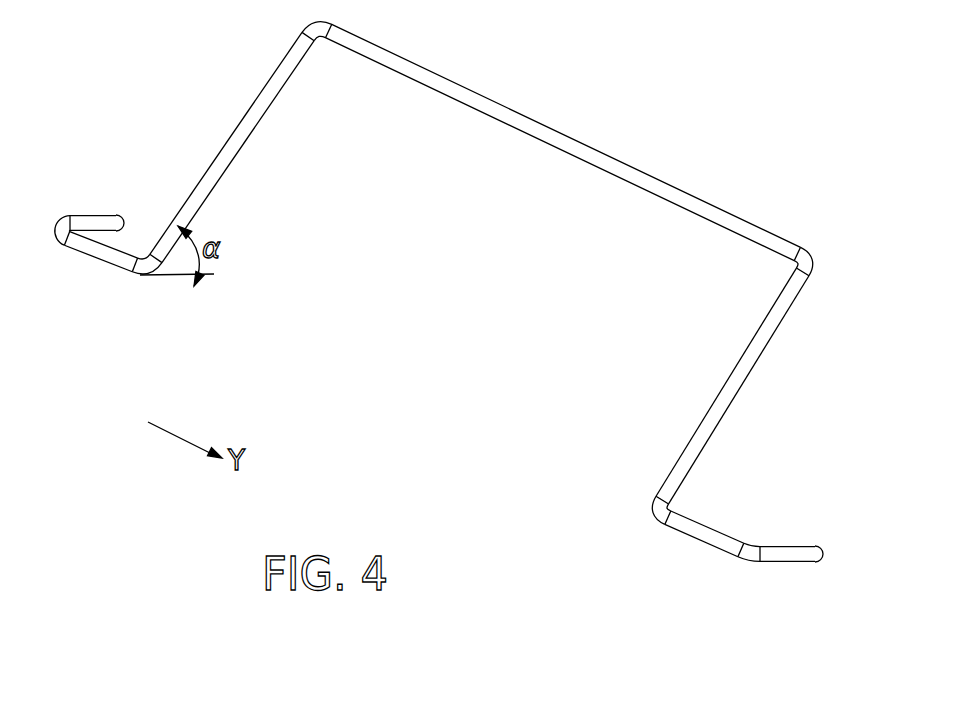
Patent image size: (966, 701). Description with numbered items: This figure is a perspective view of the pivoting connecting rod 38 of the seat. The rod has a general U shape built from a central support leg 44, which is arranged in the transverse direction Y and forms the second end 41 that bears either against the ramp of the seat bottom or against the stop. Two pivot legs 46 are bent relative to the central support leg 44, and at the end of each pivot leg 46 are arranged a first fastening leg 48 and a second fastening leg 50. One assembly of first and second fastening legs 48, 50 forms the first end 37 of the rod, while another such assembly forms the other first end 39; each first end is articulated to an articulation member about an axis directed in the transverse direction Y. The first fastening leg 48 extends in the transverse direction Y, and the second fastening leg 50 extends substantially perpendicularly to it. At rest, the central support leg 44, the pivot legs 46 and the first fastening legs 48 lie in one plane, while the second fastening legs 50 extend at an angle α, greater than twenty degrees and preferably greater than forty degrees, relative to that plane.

The first end 37 is at (148, 298).
The pivoting connecting rod 38 is at (378, 426).
The first end 39 is at (638, 514).
The second end 41 is at (829, 263).
The central support leg 44 is at (590, 153).
The pivot legs 46 is at (243, 137).
The first fastening leg 48 is at (98, 248).
The second fastening leg 50 is at (97, 215).